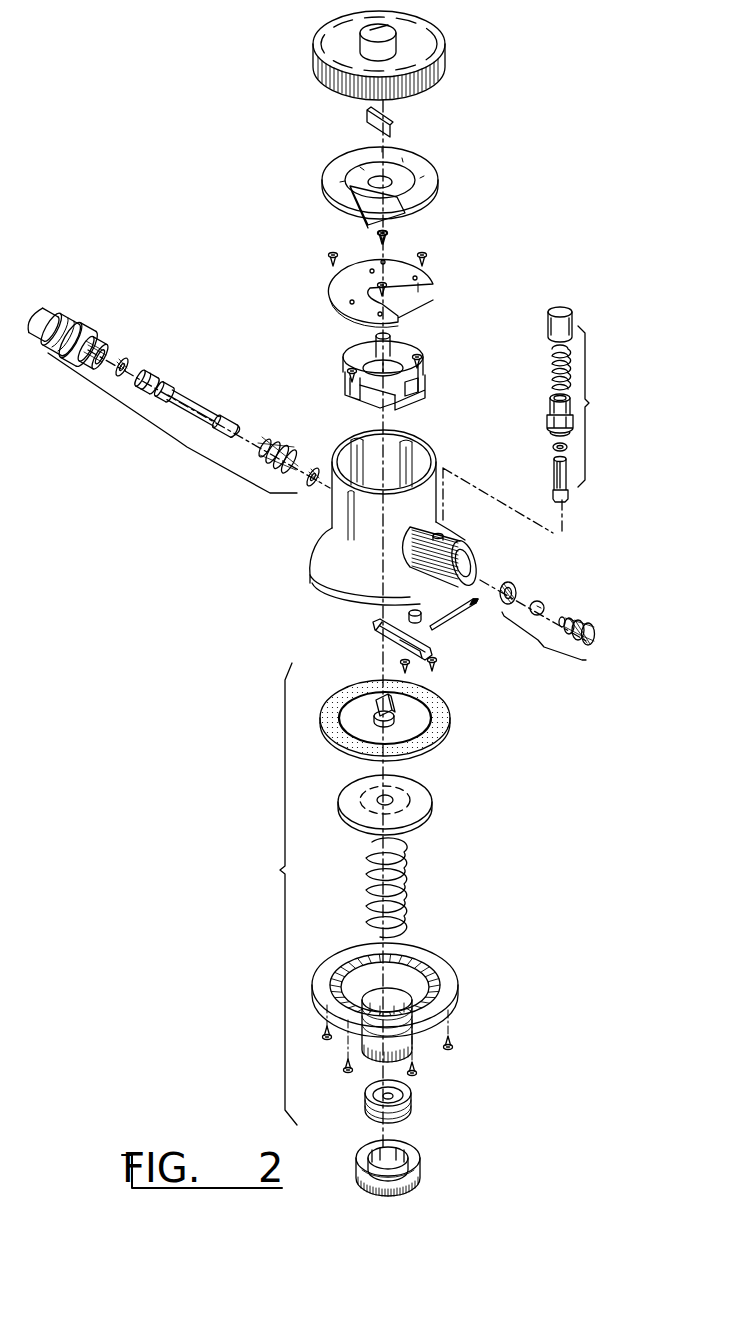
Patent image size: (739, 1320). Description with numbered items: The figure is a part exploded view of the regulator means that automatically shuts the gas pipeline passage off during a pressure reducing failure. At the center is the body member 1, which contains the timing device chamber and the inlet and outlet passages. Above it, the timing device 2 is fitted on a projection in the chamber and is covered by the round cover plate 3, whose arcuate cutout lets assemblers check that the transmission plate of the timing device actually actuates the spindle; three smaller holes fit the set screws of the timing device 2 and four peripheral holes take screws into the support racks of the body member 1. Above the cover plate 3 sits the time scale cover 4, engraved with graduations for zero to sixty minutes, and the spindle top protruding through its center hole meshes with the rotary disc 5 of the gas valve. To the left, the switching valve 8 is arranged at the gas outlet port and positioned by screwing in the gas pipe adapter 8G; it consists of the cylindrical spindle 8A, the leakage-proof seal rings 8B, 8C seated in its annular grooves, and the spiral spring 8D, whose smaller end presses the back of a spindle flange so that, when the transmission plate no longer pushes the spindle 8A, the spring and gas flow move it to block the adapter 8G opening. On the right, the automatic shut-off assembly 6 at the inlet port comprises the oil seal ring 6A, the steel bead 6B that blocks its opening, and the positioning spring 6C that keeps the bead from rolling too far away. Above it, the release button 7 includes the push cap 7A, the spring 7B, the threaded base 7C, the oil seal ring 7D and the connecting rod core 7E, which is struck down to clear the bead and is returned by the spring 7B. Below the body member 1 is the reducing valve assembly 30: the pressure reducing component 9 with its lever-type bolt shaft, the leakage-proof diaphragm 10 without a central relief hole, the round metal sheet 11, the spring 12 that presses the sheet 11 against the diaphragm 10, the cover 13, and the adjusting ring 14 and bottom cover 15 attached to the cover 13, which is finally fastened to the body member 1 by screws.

The body member 1 is at (310, 572).
The timing device 2 is at (350, 367).
The cover plate 3 is at (333, 285).
The time scale cover 4 is at (323, 175).
The rotary disc 5 is at (332, 55).
The automatic shut-off assembly 6 is at (544, 642).
The oil seal ring 6A is at (514, 593).
The steel bead 6B is at (545, 609).
The positioning spring 6C is at (590, 635).
The release button 7 is at (594, 406).
The push cap 7A is at (555, 313).
The spring 7B is at (553, 353).
The base 7C is at (557, 398).
The oil seal ring 7D is at (557, 445).
The connecting rod core 7E is at (555, 483).
The switching valve 8 is at (172, 423).
The spindle 8A is at (193, 400).
The leakage-proof seal ring 8B is at (122, 360).
The leakage-proof seal ring 8C is at (315, 467).
The spiral spring 8D is at (273, 447).
The gas pipe adapter 8G is at (88, 332).
The pressure reducing component 9 is at (373, 623).
The leakage-proof diaphragm 10 is at (447, 713).
The round metal sheet 11 is at (427, 802).
The spring 12 is at (407, 878).
The cover 13 is at (453, 987).
The adjusting ring 14 is at (412, 1093).
The bottom cover 15 is at (415, 1163).
The reducing valve assembly 30 is at (270, 894).